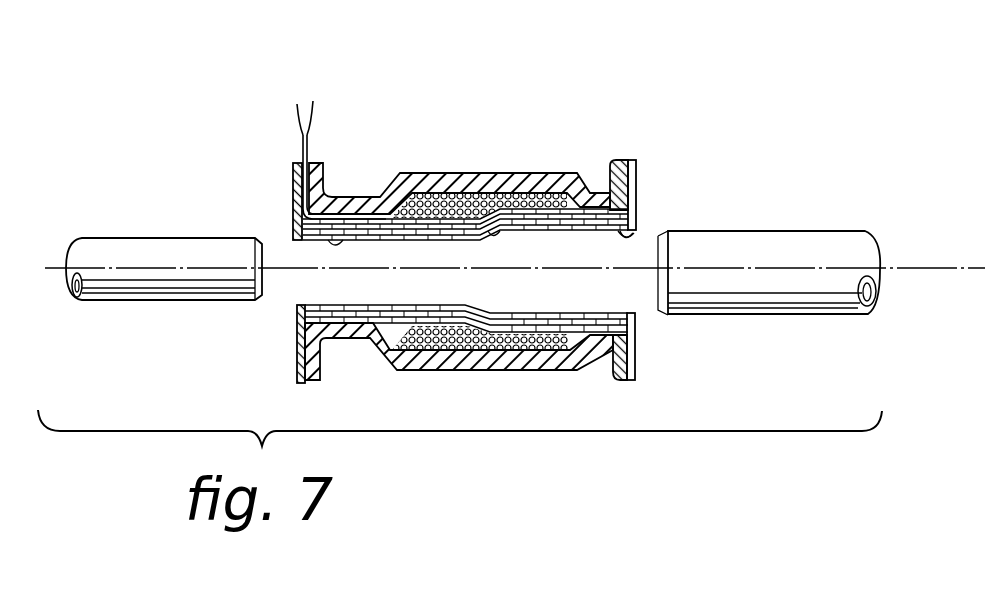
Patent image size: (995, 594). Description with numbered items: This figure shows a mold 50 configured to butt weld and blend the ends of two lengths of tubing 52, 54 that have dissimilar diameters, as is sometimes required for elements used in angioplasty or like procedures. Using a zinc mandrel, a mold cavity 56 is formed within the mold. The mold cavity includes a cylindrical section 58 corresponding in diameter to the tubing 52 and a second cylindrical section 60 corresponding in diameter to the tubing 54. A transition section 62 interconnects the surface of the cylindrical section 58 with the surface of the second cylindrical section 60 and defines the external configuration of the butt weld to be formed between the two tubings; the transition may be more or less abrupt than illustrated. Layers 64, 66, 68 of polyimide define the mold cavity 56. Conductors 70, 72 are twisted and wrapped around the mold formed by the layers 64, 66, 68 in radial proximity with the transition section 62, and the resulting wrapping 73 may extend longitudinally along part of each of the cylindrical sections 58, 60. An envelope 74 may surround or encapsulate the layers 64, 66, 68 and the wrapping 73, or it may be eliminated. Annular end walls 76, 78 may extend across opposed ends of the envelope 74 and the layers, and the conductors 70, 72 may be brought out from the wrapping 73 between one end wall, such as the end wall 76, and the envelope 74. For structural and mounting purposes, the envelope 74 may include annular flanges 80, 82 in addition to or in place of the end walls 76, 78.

The mold 50 is at (498, 147).
The tubing 52 is at (150, 237).
The tubing 54 is at (793, 227).
The mold cavity 56 is at (543, 247).
The cylindrical section 58 is at (340, 200).
The second cylindrical section 60 is at (636, 245).
The transition section 62 is at (503, 213).
The layer 64 is at (637, 313).
The layer 66 is at (637, 318).
The layer 68 is at (637, 323).
The conductor 70 is at (297, 104).
The conductor 72 is at (313, 101).
The wrapping 73 is at (413, 194).
The envelope 74 is at (507, 362).
The annular end wall 76 is at (293, 203).
The annular end wall 78 is at (636, 170).
The annular flange 80 is at (318, 383).
The annular flange 82 is at (613, 345).